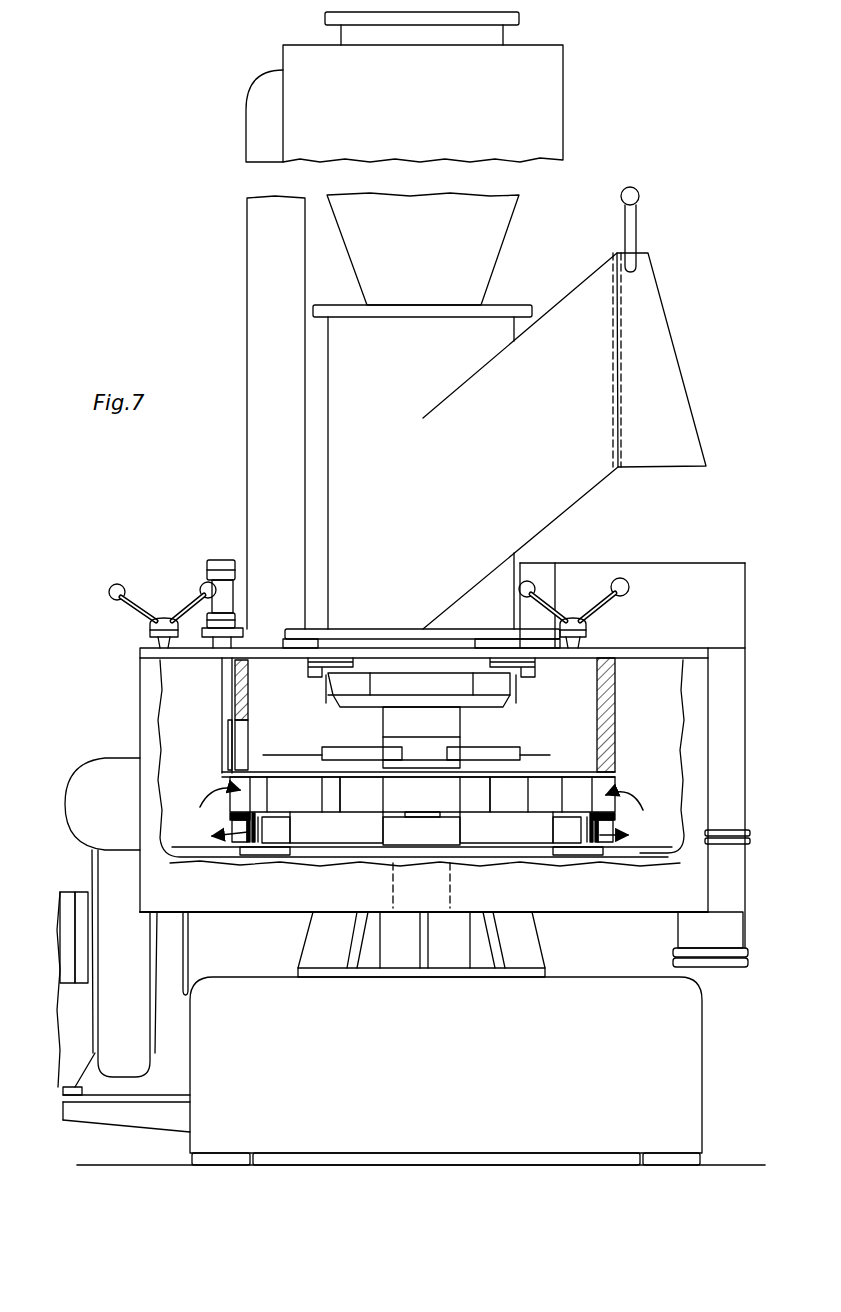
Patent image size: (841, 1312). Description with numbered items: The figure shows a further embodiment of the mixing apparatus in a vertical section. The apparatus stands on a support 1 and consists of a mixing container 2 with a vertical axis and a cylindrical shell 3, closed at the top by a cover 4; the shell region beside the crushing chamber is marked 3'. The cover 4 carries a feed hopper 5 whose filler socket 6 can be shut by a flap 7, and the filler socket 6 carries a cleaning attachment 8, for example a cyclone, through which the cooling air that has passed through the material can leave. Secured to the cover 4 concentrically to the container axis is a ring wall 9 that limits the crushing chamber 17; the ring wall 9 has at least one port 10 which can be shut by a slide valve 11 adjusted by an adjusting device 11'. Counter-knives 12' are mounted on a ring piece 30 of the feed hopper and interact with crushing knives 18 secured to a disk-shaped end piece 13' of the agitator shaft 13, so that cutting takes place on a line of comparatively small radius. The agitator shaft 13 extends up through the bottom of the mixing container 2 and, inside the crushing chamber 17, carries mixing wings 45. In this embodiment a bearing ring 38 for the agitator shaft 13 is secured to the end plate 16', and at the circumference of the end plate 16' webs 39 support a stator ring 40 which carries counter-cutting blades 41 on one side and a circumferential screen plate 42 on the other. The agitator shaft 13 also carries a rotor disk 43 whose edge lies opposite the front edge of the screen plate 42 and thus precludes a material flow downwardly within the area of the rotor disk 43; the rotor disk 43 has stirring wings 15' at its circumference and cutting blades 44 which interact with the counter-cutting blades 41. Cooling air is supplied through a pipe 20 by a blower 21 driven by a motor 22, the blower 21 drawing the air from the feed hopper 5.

The support 1 is at (600, 1051).
The mixing container 2 is at (567, 904).
The cylindrical shell 3 is at (635, 765).
The wall lining 3' is at (662, 756).
The cover 4 is at (622, 653).
The feed hopper 5 is at (415, 496).
The filler socket 6 is at (675, 382).
The flap 7 is at (617, 330).
The cleaning attachment 8 is at (408, 258).
The ring wall 9 is at (608, 728).
The port 10 is at (240, 750).
The slide valve 11 is at (209, 750).
The adjusting device 11' is at (215, 585).
The counter-knives 12' is at (532, 695).
The agitator shaft 13 is at (430, 807).
The disk-shaped end piece 13' is at (348, 708).
The stirring wings 15' is at (424, 785).
The end plate 16' is at (629, 809).
The crushing chamber 17 is at (561, 731).
The crushing knives 18 is at (473, 685).
The pipe 20 is at (93, 816).
The blower 21 is at (112, 991).
The motor 22 is at (67, 975).
The ring piece 30 is at (533, 668).
The bearing ring 38 is at (395, 797).
The webs 39 is at (330, 792).
The stator ring 40 is at (237, 818).
The counter-cutting blades 41 is at (258, 802).
The circumferential screen plate 42 is at (318, 830).
The rotor disk 43 is at (520, 848).
The cutting blades 44 is at (277, 838).
The mixing wings 45 is at (295, 750).